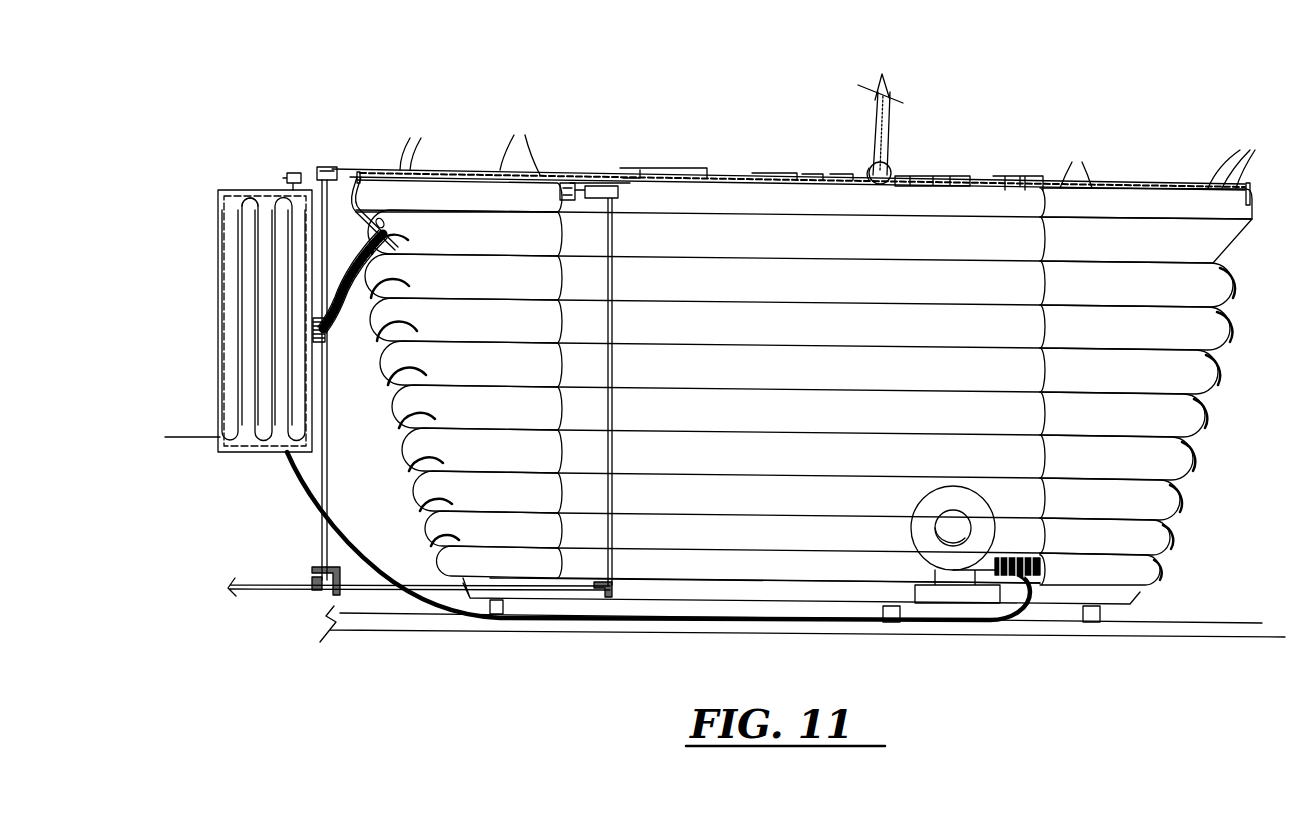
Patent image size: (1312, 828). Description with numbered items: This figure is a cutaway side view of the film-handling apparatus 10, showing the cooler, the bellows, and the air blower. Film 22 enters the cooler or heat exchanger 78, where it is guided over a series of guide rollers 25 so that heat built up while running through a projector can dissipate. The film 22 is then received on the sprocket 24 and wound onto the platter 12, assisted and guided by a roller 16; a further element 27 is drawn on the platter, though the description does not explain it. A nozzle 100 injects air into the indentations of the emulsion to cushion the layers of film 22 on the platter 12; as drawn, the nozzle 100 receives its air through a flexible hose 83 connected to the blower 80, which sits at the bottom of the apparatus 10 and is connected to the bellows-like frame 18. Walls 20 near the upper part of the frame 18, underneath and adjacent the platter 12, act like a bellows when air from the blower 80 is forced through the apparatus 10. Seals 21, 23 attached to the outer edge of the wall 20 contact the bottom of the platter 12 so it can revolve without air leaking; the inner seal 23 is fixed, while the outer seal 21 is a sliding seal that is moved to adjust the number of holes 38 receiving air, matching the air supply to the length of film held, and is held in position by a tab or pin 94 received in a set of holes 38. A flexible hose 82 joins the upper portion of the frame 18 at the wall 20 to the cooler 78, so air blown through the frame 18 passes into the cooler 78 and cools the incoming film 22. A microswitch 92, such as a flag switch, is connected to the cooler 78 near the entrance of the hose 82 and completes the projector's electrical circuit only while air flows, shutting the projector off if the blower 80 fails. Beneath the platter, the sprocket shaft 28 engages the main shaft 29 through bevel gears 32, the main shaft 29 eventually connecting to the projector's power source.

The apparatus 10 is at (1203, 150).
The platter 12 is at (340, 175).
The roller 16 is at (961, 175).
The bellows-like frame 18 is at (398, 457).
The walls 20 is at (1237, 310).
The outer seal 21 is at (358, 197).
The film 22 is at (462, 170).
The inner seal 23 is at (562, 180).
The sprocket 24 is at (324, 166).
The guide rollers 25 is at (249, 198).
The pump 27 is at (867, 166).
The sprocket shaft 28 is at (320, 521).
The main shaft 29 is at (262, 590).
The bevel gears 32 is at (312, 580).
The holes 38 is at (837, 151).
The cooler or heat exchanger 78 is at (203, 318).
The blower 80 is at (925, 566).
The flexible hose 82 is at (347, 305).
The flexible hose 83 is at (300, 480).
The microswitch 92 is at (325, 337).
The tab or pin 94 is at (359, 171).
The nozzle 100 is at (292, 172).